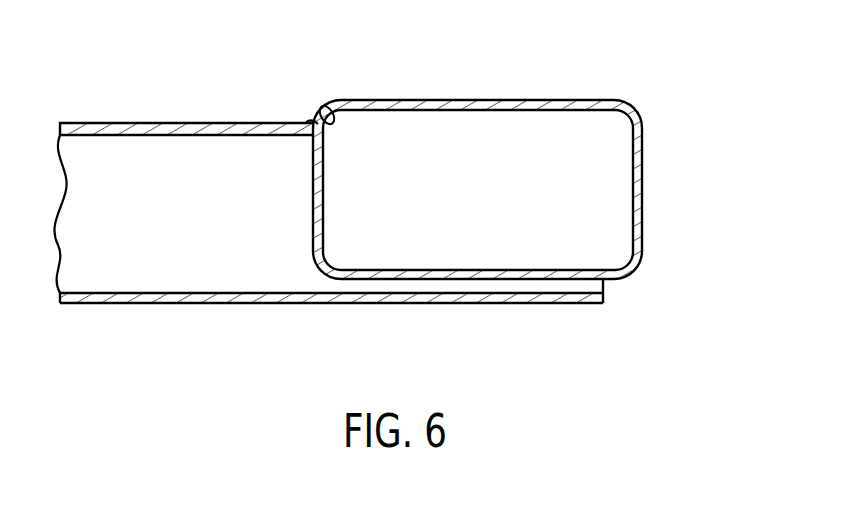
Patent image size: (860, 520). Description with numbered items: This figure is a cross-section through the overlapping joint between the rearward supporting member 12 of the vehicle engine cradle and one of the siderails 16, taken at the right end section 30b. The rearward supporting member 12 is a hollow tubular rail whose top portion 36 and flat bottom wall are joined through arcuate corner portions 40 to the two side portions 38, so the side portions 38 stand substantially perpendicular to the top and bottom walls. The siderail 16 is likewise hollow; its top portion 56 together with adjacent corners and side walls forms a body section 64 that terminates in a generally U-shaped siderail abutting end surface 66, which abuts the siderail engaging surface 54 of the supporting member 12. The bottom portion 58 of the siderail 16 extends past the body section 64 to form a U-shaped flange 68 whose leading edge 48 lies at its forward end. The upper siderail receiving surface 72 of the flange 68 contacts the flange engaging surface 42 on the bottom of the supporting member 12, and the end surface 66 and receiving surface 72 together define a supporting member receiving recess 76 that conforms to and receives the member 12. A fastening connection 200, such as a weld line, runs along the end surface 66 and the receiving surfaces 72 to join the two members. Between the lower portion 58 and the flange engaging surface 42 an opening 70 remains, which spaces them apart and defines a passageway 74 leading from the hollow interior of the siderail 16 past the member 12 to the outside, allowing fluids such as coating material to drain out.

The rearward supporting member 12 is at (612, 100).
The siderail 16 is at (278, 304).
The right end section 30b is at (572, 71).
The top portion 36 is at (443, 100).
The side portion 38 is at (637, 190).
The arcuate corner portion 40 is at (630, 107).
The flange engaging surface 42 is at (540, 280).
The leading edge 48 is at (606, 300).
The siderail engaging surface 54 is at (312, 207).
The top portion 56 is at (125, 122).
The bottom portion 58 is at (105, 304).
The body section 64 is at (206, 315).
The siderail abutting end surface 66 is at (322, 106).
The flange 68 is at (572, 314).
The opening 70 is at (619, 288).
The siderail receiving surface 72 is at (400, 270).
The passageway 74 is at (482, 294).
The supporting member receiving recess 76 is at (464, 259).
The fastening connection 200 is at (310, 120).